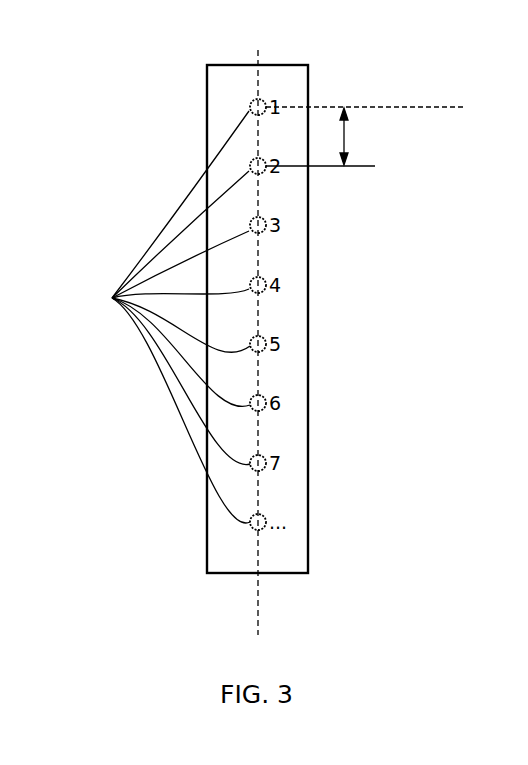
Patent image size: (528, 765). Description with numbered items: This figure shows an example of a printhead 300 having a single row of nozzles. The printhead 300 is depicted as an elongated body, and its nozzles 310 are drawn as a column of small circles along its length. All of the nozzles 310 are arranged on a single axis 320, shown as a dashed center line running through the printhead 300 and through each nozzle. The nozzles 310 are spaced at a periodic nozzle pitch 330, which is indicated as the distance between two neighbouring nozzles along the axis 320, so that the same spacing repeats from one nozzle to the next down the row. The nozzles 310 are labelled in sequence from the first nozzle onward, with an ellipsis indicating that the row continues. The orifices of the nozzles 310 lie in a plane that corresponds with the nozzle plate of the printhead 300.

The printhead 300 is at (272, 65).
The nozzles 310 is at (162, 317).
The single axis 320 is at (259, 600).
The periodic nozzle pitch 330 is at (365, 136).